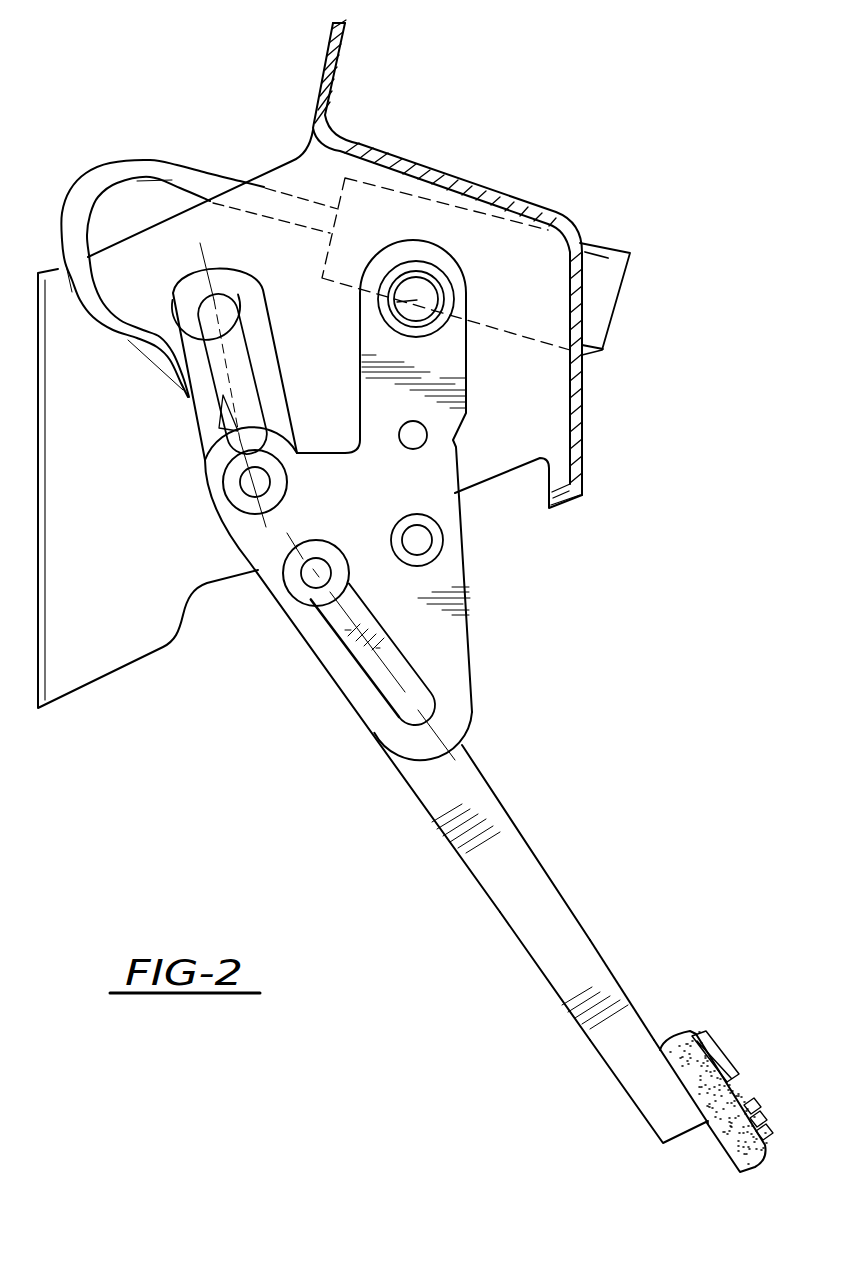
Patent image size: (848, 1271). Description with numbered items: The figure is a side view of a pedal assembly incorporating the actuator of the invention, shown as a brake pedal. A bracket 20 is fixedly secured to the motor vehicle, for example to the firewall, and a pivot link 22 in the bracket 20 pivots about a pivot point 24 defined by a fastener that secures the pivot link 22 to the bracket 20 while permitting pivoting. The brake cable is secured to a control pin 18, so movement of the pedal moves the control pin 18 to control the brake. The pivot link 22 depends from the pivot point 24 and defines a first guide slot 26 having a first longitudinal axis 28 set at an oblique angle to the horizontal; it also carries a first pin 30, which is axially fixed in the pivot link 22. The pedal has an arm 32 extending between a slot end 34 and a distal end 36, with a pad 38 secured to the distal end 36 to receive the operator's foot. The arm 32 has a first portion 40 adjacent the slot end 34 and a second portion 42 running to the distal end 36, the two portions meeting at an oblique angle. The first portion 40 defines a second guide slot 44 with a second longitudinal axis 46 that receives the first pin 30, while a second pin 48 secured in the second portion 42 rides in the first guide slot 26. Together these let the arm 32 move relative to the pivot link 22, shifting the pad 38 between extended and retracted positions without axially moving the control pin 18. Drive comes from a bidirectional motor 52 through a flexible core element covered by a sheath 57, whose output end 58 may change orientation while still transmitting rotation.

The control pin 18 is at (433, 537).
The bracket 20 is at (335, 61).
The pivot link 22 is at (468, 373).
The pivot point 24 is at (393, 319).
The first guide slot 26 is at (393, 700).
The first longitudinal axis 28 is at (445, 733).
The first pin 30 is at (271, 479).
The arm 32 is at (425, 804).
The slot end 34 is at (218, 262).
The distal end 36 is at (634, 1103).
The pad 38 is at (717, 1043).
The first portion 40 is at (197, 441).
The second portion 42 is at (525, 945).
The second guide slot 44 is at (244, 400).
The second longitudinal axis 46 is at (175, 296).
The second pin 48 is at (298, 604).
The motor 52 is at (610, 262).
The sheath 57 is at (108, 165).
The output end 58 is at (181, 390).